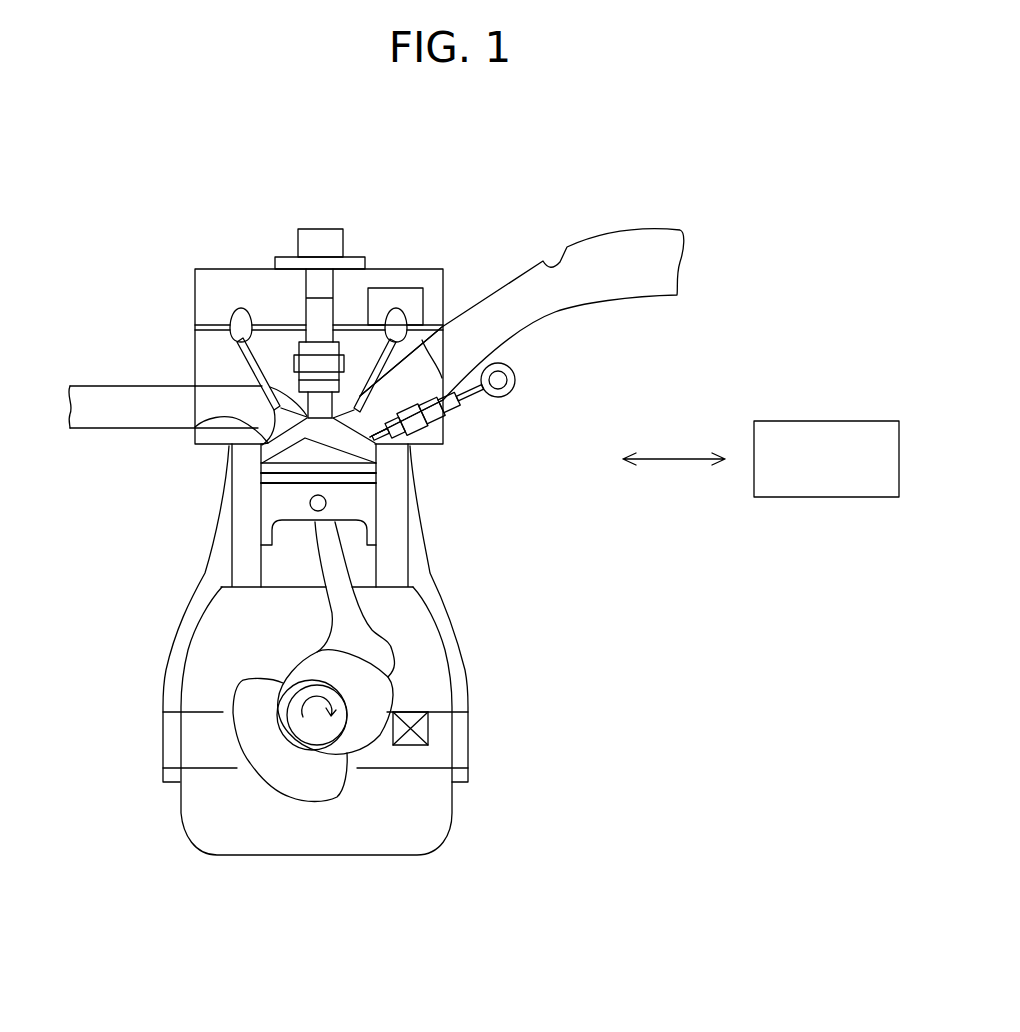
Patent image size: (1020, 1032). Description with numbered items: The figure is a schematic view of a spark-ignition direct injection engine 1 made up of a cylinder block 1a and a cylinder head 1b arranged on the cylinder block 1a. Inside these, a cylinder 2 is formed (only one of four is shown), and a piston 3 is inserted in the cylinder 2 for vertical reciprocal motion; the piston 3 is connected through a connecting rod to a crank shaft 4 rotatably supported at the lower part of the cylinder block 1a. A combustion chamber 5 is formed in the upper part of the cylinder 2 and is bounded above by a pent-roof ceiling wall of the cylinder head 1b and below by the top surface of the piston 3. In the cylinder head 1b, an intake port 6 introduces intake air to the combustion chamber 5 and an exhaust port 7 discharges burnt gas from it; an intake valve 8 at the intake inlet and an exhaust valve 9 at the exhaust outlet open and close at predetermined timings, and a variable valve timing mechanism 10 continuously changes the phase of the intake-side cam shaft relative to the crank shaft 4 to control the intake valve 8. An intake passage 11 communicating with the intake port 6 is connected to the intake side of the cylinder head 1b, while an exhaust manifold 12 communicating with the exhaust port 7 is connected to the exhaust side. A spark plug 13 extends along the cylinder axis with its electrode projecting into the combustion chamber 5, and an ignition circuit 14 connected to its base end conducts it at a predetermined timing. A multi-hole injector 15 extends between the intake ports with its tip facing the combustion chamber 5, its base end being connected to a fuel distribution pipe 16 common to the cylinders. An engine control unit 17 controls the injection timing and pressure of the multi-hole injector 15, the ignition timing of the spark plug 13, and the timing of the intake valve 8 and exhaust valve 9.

The direct injection engine 1 is at (546, 656).
The cylinder block 1a is at (205, 573).
The cylinder head 1b is at (193, 378).
The cylinder 2 is at (262, 560).
The piston 3 is at (273, 498).
The crank shaft 4 is at (258, 772).
The combustion chamber 5 is at (345, 444).
The intake port 6 is at (470, 400).
The exhaust port 7 is at (197, 417).
The intake valve 8 is at (377, 350).
The exhaust valve 9 is at (235, 363).
The variable valve timing mechanism 10 is at (410, 288).
The intake passage 11 is at (563, 260).
The exhaust manifold 12 is at (105, 398).
The spark plug 13 is at (293, 356).
The ignition circuit 14 is at (315, 238).
The multi-hole injector 15 is at (427, 440).
The fuel distribution pipe 16 is at (515, 373).
The engine control unit 17 is at (828, 420).